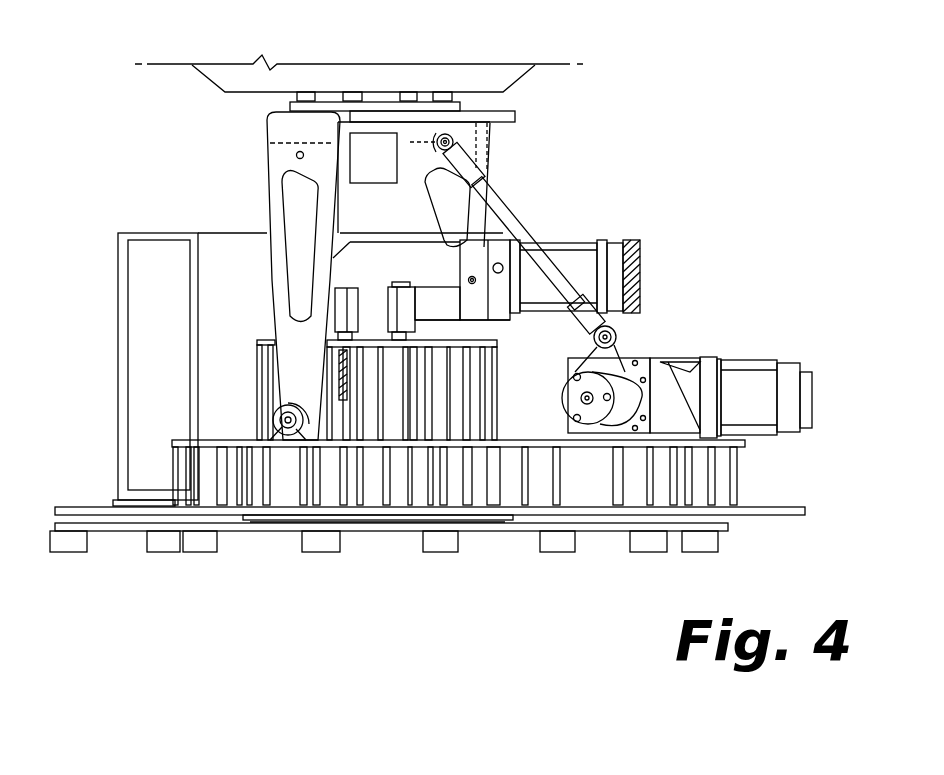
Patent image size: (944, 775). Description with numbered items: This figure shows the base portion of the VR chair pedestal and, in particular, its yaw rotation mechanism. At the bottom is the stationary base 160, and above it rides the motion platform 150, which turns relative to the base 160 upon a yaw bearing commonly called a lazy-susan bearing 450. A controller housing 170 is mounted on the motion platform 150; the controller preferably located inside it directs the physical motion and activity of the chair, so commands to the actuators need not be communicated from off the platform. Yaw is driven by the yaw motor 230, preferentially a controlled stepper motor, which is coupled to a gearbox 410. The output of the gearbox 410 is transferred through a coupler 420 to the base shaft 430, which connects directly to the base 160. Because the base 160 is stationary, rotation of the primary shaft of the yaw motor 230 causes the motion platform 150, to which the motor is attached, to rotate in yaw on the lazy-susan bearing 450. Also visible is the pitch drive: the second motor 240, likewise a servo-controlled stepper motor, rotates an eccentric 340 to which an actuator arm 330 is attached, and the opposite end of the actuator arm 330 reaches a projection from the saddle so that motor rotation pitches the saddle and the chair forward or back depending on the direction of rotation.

The motion platform 150 is at (773, 502).
The base 160 is at (607, 532).
The controller housing 170 is at (118, 297).
The yaw motor 230 is at (615, 240).
The second motor 240 is at (772, 358).
The actuator arm 330 is at (522, 221).
The eccentric 340 is at (600, 362).
The gearbox 410 is at (422, 267).
The coupler 420 is at (370, 308).
The base shaft 430 is at (372, 378).
The lazy-susan bearing 450 is at (483, 515).